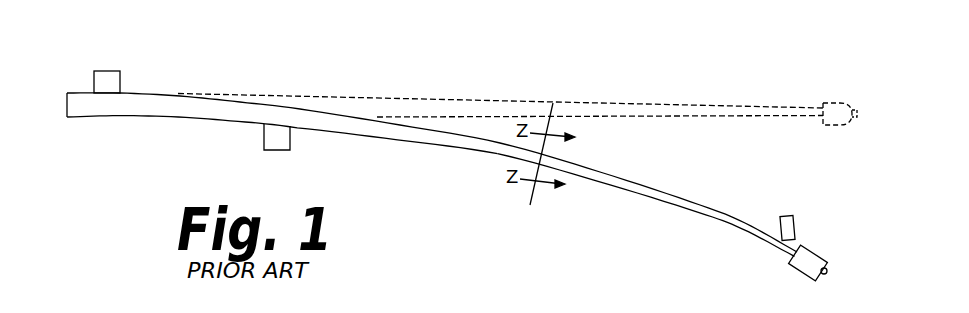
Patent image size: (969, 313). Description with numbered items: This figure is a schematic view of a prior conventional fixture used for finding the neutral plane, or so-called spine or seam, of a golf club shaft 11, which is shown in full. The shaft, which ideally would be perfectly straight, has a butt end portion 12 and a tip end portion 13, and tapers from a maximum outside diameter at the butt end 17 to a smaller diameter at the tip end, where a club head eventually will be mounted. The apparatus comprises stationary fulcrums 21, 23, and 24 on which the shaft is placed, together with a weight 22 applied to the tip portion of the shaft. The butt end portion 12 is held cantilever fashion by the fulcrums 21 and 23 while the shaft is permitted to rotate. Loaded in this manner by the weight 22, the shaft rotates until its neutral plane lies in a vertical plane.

The golf club shaft 11 is at (344, 112).
The butt end portion 12 is at (181, 114).
The tip end portion 13 is at (745, 222).
The butt end 17 is at (67, 107).
The stationary fulcrum 21 is at (280, 143).
The weight 22 is at (810, 260).
The stationary fulcrum 23 is at (113, 83).
The stationary fulcrum 24 is at (836, 137).